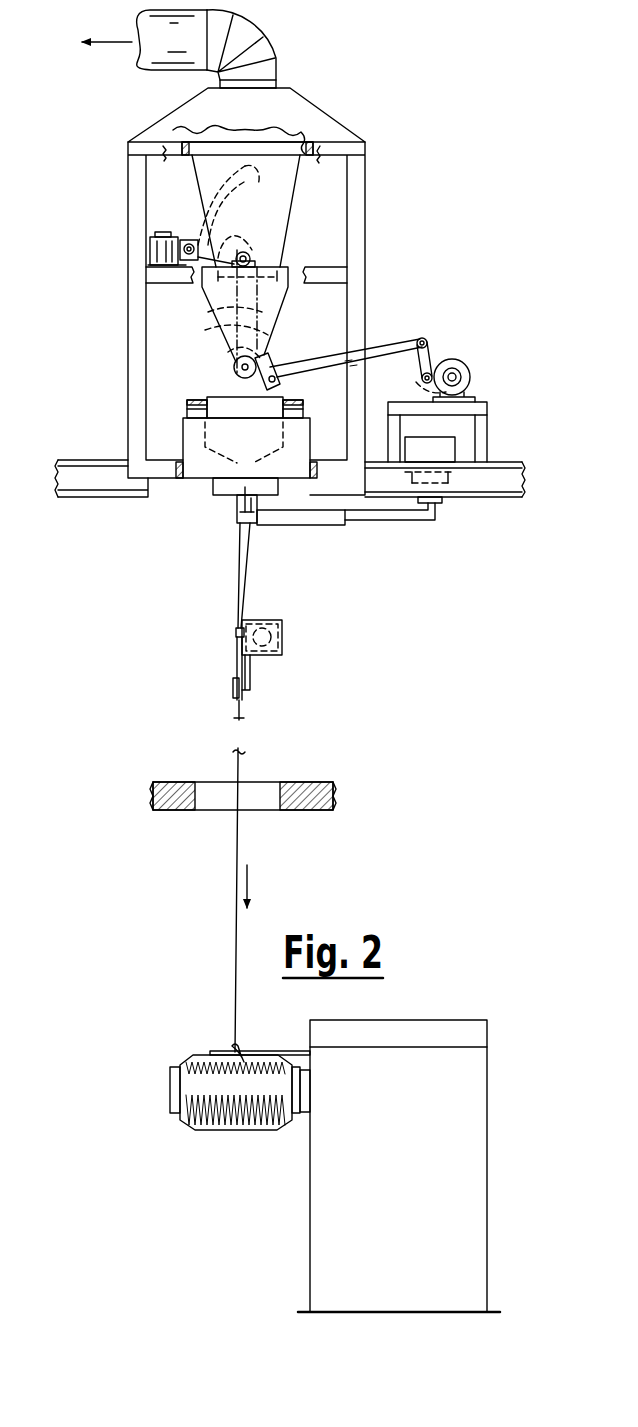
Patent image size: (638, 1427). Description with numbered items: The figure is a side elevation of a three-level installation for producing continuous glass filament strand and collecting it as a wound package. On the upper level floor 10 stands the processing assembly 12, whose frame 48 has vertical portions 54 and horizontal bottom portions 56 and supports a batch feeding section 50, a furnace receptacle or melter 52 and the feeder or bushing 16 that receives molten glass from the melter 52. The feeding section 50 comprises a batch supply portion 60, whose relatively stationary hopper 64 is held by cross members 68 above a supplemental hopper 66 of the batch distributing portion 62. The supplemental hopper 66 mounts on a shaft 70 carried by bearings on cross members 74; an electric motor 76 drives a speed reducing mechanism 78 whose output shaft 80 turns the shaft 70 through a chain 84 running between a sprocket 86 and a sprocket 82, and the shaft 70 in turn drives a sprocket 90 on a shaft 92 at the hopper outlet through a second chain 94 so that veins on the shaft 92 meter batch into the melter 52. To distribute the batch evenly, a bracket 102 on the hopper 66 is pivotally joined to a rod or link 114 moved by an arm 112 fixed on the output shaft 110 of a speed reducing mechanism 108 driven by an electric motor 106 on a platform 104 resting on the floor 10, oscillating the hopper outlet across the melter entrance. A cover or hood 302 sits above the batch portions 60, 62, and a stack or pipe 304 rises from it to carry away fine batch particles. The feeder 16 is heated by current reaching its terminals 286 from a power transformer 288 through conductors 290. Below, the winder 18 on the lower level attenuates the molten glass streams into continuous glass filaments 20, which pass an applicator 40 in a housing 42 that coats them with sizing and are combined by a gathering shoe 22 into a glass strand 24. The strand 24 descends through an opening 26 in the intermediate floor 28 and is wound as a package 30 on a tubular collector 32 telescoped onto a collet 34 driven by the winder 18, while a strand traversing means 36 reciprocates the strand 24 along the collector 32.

The upper level floor 10 is at (78, 460).
The processing assembly 12 is at (353, 104).
The feeder or bushing 16 is at (228, 490).
The winder 18 is at (465, 1020).
The continuous glass filaments 20 is at (248, 560).
The gathering shoe 22 is at (233, 685).
The glass strand 24 is at (234, 752).
The opening 26 is at (262, 793).
The intermediate floor 28 is at (180, 782).
The package 30 is at (232, 1131).
The tubular collector 32 is at (180, 1118).
The collet 34 is at (170, 1085).
The strand traversing means 36 is at (234, 1046).
The applicator 40 is at (244, 626).
The housing 42 is at (282, 632).
The frame 48 is at (370, 228).
The batch feeding section 50 is at (198, 298).
The furnace receptacle or melter 52 is at (222, 397).
The vertical portions 54 is at (135, 188).
The horizontal bottom portions 56 is at (155, 488).
The batch supply portion 60 is at (303, 204).
The batch distributing portion 62 is at (296, 299).
The relatively stationary hopper 64 is at (298, 180).
The supplemental hopper 66 is at (208, 314).
The cross members 68 is at (182, 148).
The shaft 70 is at (248, 254).
The cross members 74 is at (333, 266).
The electric motor 76 is at (152, 237).
The speed reducing mechanism 78 is at (188, 240).
The output shaft 80 is at (196, 206).
The sprocket 82 is at (218, 228).
The chain 84 is at (222, 202).
The sprocket 86 is at (225, 177).
The sprocket 90 is at (228, 352).
The shaft 92 is at (234, 370).
The second chain 94 is at (207, 331).
The bracket 102 is at (276, 366).
The platform 104 is at (490, 444).
The electric motor 106 is at (468, 366).
The speed reducing mechanism 108 is at (415, 382).
The output shaft 110 is at (430, 365).
The arm 112 is at (428, 340).
The rod or link 114 is at (336, 356).
The terminals 286 is at (236, 498).
The power transformer 288 is at (455, 448).
The conductors 290 is at (340, 522).
The cover or hood 302 is at (178, 108).
The stack or pipe 304 is at (150, 72).